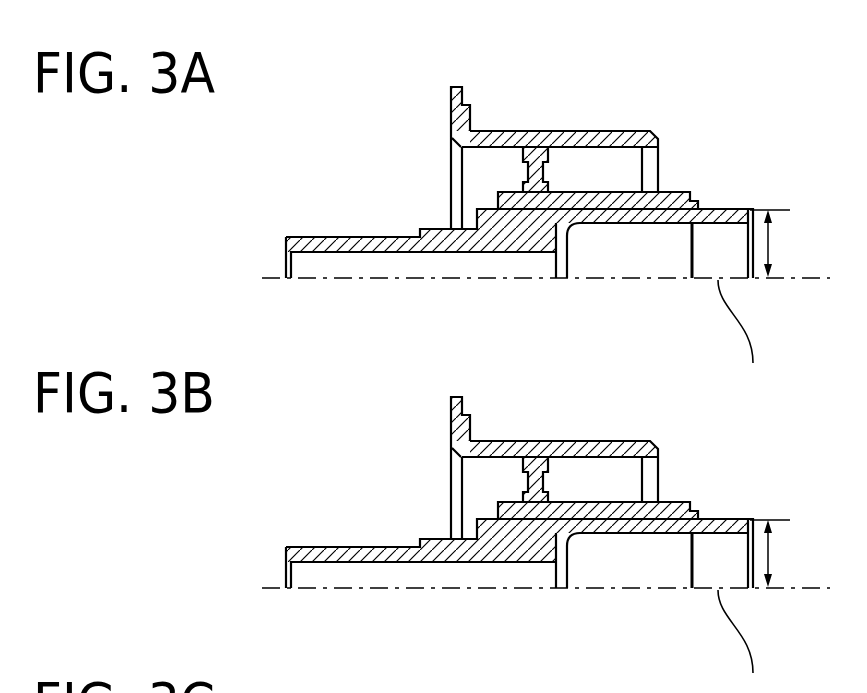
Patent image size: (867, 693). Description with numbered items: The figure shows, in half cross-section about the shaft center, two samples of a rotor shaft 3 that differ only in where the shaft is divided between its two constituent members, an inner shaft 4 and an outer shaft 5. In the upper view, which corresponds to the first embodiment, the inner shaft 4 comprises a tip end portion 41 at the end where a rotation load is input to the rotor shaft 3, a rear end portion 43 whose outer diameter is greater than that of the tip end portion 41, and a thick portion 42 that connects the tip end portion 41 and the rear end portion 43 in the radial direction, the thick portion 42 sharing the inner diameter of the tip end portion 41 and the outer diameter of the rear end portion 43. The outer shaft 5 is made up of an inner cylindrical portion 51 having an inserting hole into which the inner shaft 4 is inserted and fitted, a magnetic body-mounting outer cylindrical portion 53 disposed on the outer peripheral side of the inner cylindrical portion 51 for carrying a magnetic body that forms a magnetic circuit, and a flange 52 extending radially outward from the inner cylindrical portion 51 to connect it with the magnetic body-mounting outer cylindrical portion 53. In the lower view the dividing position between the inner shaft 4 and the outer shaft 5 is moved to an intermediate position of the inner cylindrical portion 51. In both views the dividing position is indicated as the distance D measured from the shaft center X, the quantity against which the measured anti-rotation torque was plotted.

In FIG. 3A, the rotor shaft 3 is at (287, 230).
In FIG. 3B, the rotor shaft 3 is at (512, 508).
In FIG. 3A, the inner shaft 4 is at (352, 232).
In FIG. 3B, the inner shaft 4 is at (519, 501).
In FIG. 3A, the tip end portion 41 is at (392, 247).
In FIG. 3A, the thick portion 42 is at (516, 232).
In FIG. 3A, the rear end portion 43 is at (680, 208).
In FIG. 3A, the outer shaft 5 is at (498, 128).
In FIG. 3B, the outer shaft 5 is at (574, 431).
In FIG. 3C, the outer shaft 5 is at (498, 663).
In FIG. 3A, the inner cylindrical portion 51 is at (603, 198).
In FIG. 3A, the flange 52 is at (537, 158).
In FIG. 3A, the magnetic body-mounting outer cylindrical portion 53 is at (632, 138).